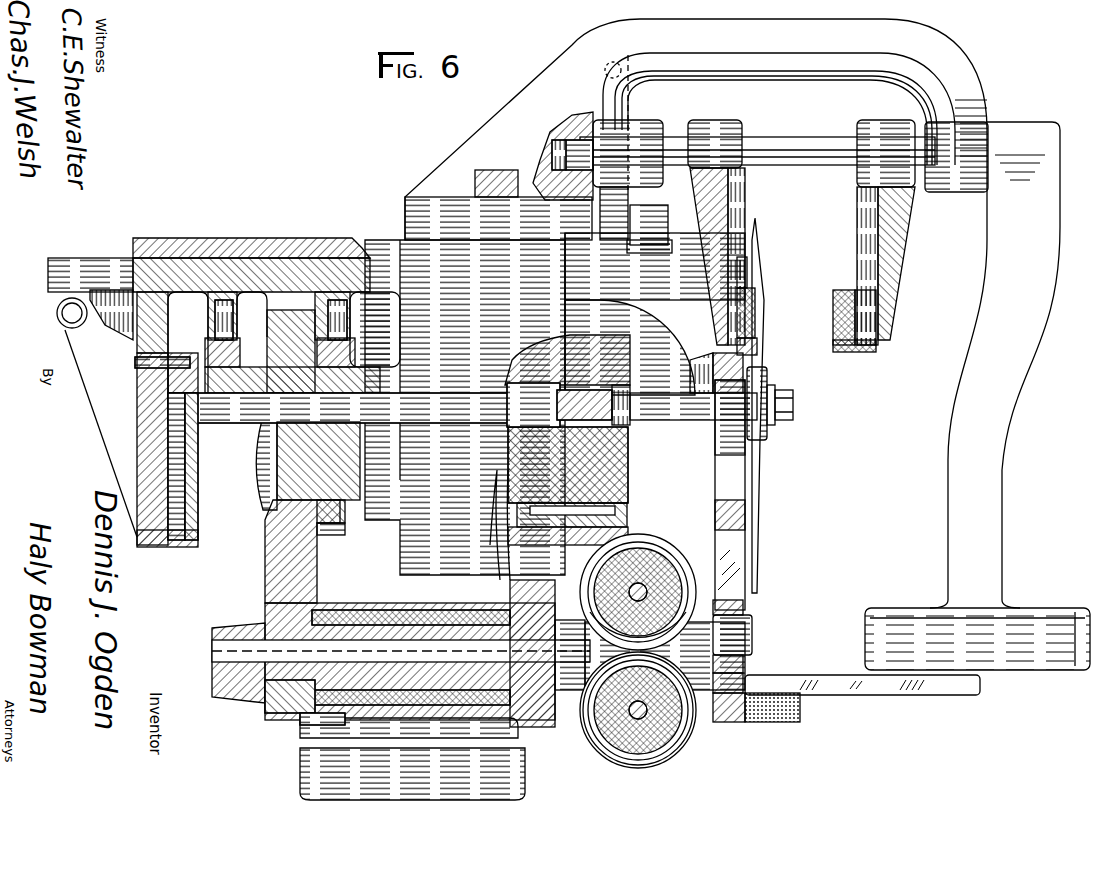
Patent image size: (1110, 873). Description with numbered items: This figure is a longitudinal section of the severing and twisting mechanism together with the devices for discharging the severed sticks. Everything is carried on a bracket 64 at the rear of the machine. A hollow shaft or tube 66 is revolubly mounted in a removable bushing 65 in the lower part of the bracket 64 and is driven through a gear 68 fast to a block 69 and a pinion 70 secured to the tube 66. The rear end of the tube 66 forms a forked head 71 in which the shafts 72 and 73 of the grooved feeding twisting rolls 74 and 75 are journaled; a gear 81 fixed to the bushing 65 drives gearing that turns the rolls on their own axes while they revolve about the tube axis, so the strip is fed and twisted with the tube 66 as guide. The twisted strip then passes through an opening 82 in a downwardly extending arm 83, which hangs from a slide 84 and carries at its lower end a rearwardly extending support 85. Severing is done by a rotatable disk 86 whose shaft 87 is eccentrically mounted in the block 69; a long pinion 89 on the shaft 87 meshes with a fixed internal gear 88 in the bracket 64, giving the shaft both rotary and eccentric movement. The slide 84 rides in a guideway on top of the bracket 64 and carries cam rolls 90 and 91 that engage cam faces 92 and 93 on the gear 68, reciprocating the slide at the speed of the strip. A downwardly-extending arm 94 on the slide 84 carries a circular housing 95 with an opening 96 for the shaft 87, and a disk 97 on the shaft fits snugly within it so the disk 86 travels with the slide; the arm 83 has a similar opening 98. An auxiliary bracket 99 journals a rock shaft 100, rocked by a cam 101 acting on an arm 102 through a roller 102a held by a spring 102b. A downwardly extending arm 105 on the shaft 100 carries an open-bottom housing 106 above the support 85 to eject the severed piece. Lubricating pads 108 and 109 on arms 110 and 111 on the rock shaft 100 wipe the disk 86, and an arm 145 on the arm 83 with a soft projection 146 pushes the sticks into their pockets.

The bracket 64 is at (255, 243).
The removable bushing 65 is at (302, 706).
The hollow shaft or tube 66 is at (245, 630).
The gear 68 is at (293, 543).
The block 69 is at (295, 467).
The pinion 70 is at (267, 695).
The forked head 71 is at (690, 667).
The shaft 72 is at (667, 562).
The shaft 73 is at (637, 712).
The feeding twisting roll 74 is at (680, 570).
The feeding twisting roll 75 is at (682, 747).
The gear 81 is at (530, 580).
The opening 82 is at (757, 638).
The downwardly extending arm 83 is at (740, 512).
The slide 84 is at (745, 253).
The rearwardly extending support 85 is at (823, 690).
The rotatable disk 86 is at (758, 357).
The shaft 87 is at (680, 400).
The fixed internal gear 88 is at (628, 503).
The long pinion 89 is at (507, 403).
The cam roll 90 is at (208, 348).
The cam roll 91 is at (372, 340).
The cam face 92 is at (262, 445).
The cam face 93 is at (345, 545).
The downwardly-extending arm 94 is at (148, 430).
The circular housing 95 is at (187, 547).
The opening 96 is at (190, 492).
The disk 97 is at (187, 394).
The opening 98 is at (740, 473).
The auxiliary bracket 99 is at (922, 77).
The rock shaft 100 is at (778, 147).
The cam 101 is at (667, 245).
The arm 102 is at (618, 210).
The roller 102a is at (637, 220).
The spring 102b is at (617, 107).
The downwardly extending arm 105 is at (1013, 355).
The open-bottom housing 106 is at (1010, 637).
The lubricating pad 108 is at (756, 297).
The lubricating pad 109 is at (833, 322).
The arm 110 is at (727, 197).
The arm 111 is at (862, 222).
The arm 145 is at (772, 719).
The projection 146 is at (797, 718).